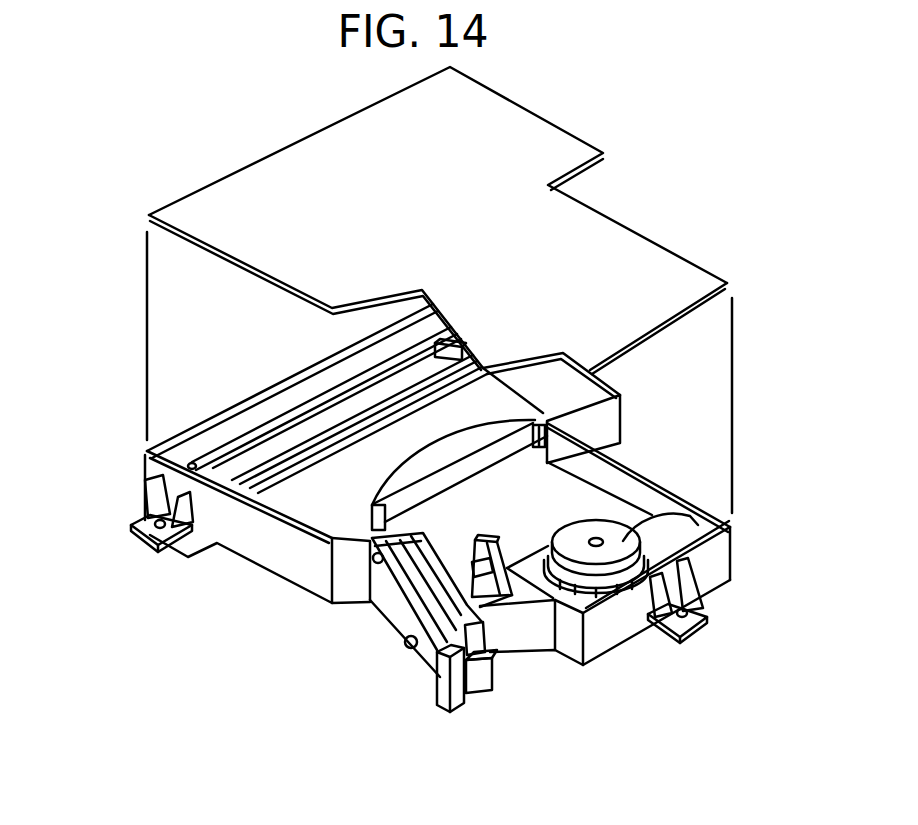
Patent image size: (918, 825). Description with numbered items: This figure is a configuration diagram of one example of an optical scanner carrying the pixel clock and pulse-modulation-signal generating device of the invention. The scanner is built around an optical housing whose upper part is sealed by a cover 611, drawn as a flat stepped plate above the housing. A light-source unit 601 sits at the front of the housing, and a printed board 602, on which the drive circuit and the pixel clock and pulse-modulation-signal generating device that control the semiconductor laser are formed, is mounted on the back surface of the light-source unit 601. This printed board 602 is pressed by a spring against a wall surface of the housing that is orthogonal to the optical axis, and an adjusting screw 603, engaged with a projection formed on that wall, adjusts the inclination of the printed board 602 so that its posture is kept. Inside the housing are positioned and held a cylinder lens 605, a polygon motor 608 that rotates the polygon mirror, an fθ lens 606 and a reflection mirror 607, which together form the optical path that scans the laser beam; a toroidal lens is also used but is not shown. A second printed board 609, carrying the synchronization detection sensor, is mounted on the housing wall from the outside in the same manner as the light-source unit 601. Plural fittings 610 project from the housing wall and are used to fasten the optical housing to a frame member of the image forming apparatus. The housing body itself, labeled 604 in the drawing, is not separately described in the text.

The light-source unit 601 is at (400, 577).
The printed board 602 is at (408, 625).
The adjusting screw 603 is at (483, 692).
The base chassis 604 is at (297, 568).
The cylinder lens 605 is at (517, 605).
The fθ lens 606 is at (512, 446).
The reflection mirror 607 is at (252, 432).
The polygon motor 608 is at (733, 540).
The printed board 609 is at (617, 417).
The fittings 610 is at (140, 520).
The cover 611 is at (623, 273).